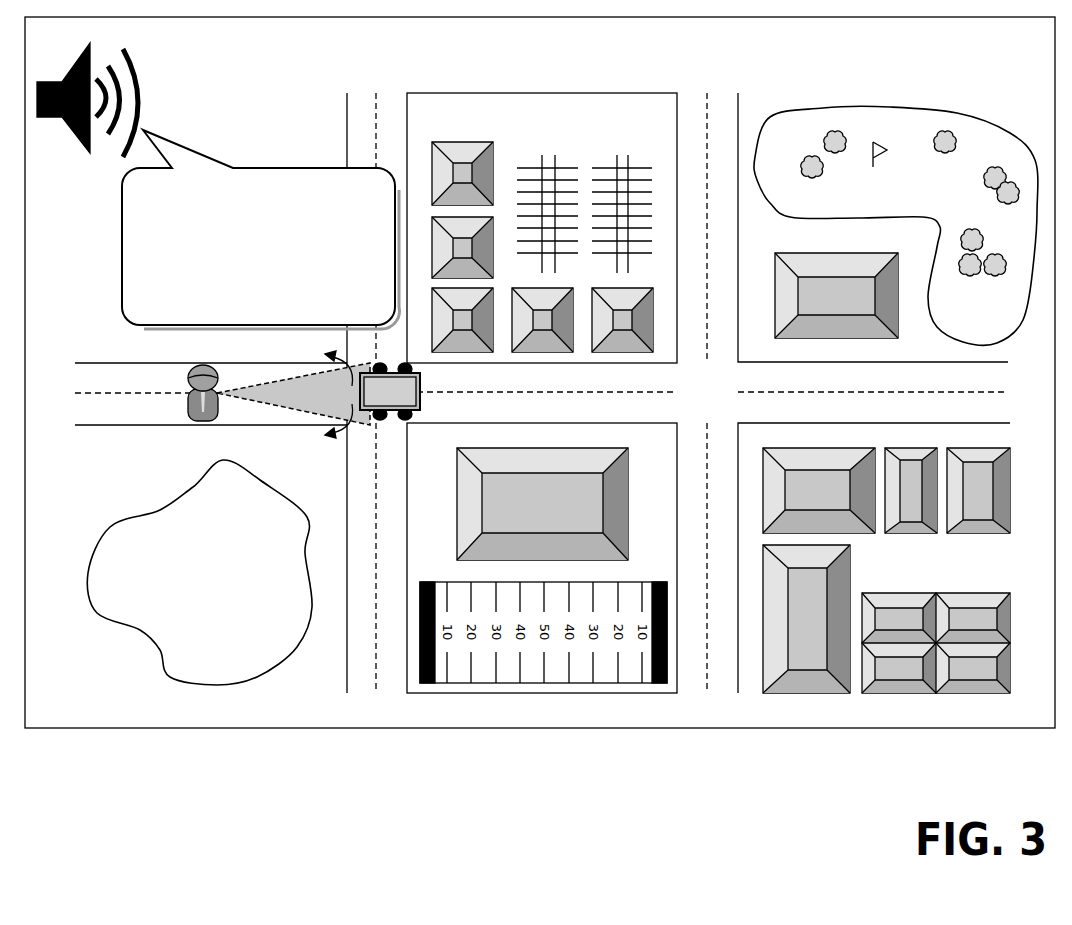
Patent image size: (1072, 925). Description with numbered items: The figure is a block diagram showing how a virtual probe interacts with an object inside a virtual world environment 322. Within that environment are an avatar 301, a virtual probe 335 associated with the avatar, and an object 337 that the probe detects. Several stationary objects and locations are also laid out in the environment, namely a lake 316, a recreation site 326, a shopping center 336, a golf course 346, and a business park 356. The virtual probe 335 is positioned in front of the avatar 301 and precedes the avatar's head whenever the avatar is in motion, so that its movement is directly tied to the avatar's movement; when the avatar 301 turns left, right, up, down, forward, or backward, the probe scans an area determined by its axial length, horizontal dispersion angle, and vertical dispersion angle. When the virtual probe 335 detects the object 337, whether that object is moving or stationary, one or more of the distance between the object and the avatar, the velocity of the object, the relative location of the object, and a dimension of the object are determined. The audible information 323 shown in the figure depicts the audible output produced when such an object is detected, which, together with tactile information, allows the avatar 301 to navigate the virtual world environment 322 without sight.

The avatar 301 is at (188, 416).
The lake 316 is at (227, 632).
The virtual world environment 322 is at (542, 206).
The audible information 323 is at (218, 173).
The recreation site 326 is at (523, 518).
The virtual probe 335 is at (290, 398).
The shopping center 336 is at (545, 141).
The object 337 is at (420, 389).
The golf course 346 is at (914, 190).
The business park 356 is at (918, 580).